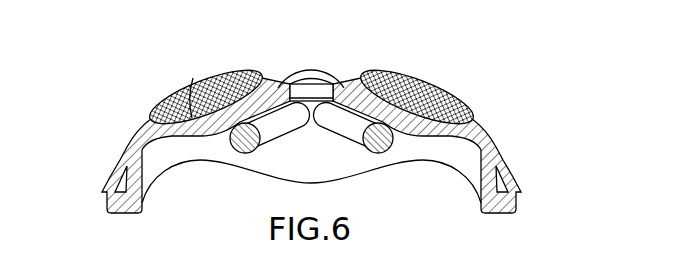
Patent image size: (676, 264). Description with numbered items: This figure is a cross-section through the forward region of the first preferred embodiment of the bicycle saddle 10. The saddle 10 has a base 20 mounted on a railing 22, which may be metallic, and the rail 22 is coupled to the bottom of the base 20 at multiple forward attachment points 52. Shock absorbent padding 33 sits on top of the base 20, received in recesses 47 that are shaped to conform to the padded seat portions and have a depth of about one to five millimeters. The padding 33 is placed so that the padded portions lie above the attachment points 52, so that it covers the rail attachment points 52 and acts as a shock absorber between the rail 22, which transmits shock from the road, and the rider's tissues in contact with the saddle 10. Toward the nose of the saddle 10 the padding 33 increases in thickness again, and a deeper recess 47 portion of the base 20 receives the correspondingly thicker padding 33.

The bicycle saddle 10 is at (62, 107).
The base 20 is at (221, 152).
The railing 22 is at (259, 143).
The shock absorbent padding 33 is at (243, 71).
The recess 47 is at (168, 93).
The forward attachment points 52 is at (214, 140).